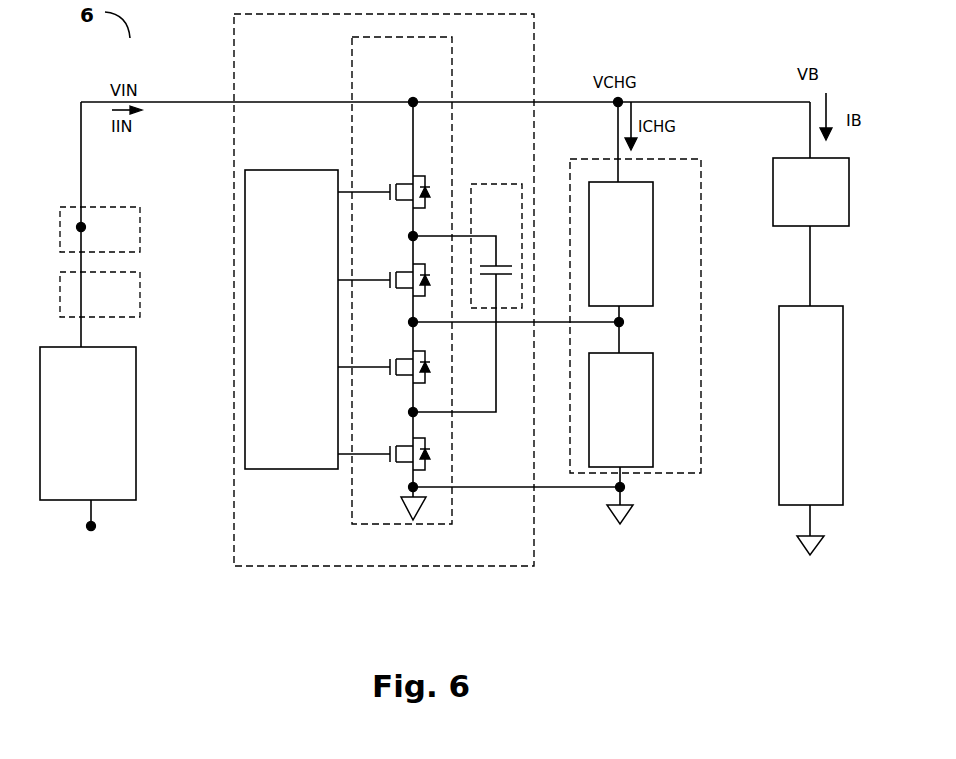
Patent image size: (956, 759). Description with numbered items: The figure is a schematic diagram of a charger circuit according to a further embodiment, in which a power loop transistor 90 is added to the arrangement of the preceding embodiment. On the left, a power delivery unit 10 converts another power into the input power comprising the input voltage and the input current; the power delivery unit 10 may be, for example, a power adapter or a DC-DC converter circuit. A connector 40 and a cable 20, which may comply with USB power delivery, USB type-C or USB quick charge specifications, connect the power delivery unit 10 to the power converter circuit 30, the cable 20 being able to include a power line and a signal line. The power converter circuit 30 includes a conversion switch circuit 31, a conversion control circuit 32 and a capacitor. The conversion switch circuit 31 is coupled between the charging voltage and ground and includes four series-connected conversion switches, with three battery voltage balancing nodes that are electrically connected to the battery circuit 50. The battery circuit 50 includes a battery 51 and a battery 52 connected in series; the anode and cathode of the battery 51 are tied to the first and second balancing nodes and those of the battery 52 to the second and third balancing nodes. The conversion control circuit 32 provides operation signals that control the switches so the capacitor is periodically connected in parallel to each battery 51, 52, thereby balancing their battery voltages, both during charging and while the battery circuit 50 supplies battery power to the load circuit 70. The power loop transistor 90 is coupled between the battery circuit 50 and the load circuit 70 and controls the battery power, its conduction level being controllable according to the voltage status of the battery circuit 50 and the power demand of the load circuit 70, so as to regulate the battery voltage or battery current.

The power delivery unit 10 is at (77, 485).
The cable 20 is at (124, 304).
The connector 40 is at (124, 238).
The power converter circuit 30 is at (515, 558).
The conversion switch circuit 31 is at (437, 76).
The conversion control circuit 32 is at (280, 331).
The battery circuit 50 is at (690, 462).
The battery 51 is at (610, 281).
The battery 52 is at (610, 448).
The load circuit 70 is at (800, 491).
The power loop transistor 90 is at (800, 201).